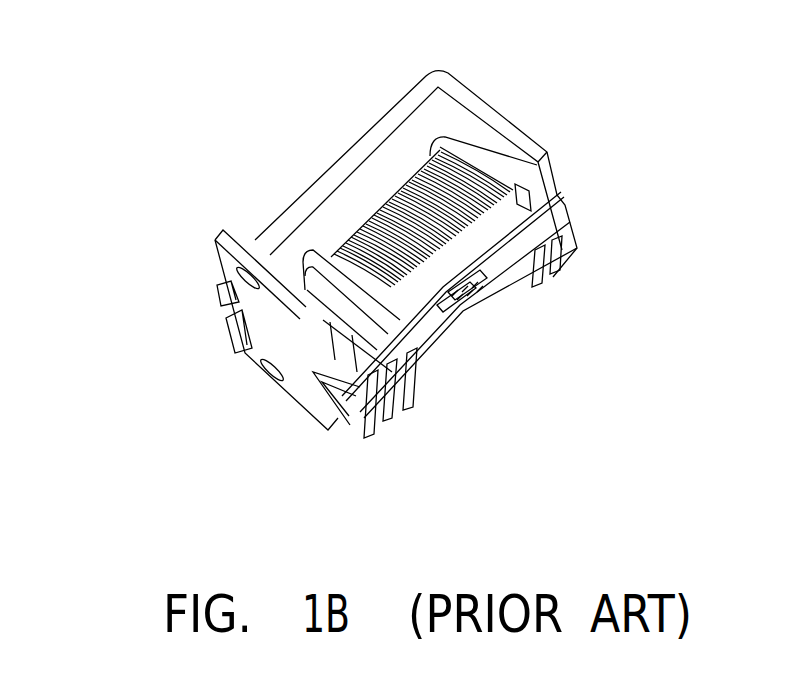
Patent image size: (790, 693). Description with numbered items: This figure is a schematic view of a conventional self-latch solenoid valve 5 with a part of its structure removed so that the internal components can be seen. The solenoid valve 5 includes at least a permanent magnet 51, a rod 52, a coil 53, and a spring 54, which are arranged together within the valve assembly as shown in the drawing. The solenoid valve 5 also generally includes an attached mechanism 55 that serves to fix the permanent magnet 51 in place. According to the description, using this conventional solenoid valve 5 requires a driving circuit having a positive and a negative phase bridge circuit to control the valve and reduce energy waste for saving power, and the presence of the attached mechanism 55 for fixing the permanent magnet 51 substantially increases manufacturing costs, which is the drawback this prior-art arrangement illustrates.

The solenoid valve 5 is at (66, 66).
The permanent magnet 51 is at (283, 260).
The rod 52 is at (423, 333).
The coil 53 is at (400, 223).
The spring 54 is at (463, 307).
The attached mechanism 55 is at (338, 320).